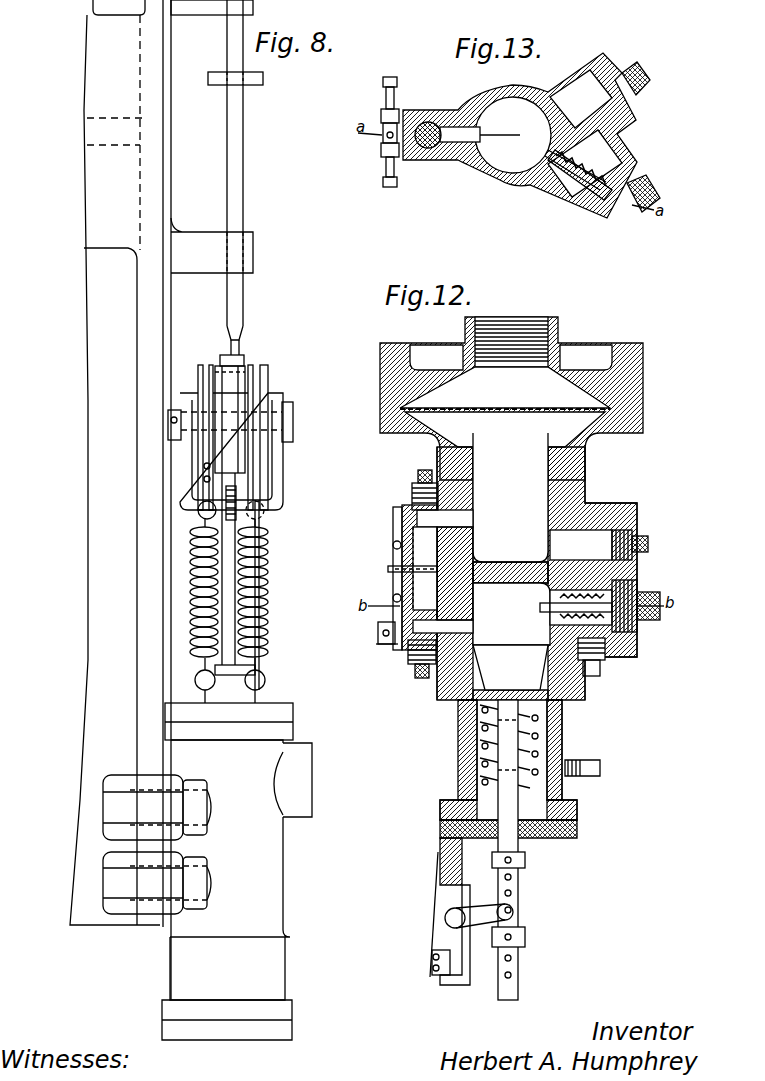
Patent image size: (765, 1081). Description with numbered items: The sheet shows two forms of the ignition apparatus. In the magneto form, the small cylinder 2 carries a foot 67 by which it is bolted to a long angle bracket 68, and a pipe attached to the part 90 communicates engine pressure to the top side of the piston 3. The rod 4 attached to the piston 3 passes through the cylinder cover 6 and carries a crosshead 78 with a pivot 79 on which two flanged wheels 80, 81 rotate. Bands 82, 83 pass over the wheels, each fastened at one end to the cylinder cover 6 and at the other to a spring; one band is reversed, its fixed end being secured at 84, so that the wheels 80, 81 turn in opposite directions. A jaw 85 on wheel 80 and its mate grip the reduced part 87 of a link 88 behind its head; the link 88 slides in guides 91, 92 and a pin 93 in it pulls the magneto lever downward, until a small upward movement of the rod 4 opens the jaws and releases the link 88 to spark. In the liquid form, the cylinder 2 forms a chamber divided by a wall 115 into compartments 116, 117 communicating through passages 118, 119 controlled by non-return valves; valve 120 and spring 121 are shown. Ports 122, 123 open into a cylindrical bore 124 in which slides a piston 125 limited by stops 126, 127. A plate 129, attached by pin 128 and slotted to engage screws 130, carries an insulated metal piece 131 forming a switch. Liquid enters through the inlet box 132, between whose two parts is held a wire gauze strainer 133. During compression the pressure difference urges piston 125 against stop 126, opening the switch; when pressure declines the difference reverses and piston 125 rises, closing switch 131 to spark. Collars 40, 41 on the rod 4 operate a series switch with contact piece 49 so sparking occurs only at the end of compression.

In FIG. 8, the small cylinder 2 is at (227, 890).
In FIG. 12, the small cylinder 2 is at (465, 710).
In FIG. 12, the piston 3 is at (510, 667).
In FIG. 8, the rod 4 is at (225, 641).
In FIG. 12, the rod 4 is at (512, 978).
In FIG. 8, the cylinder cover 6 is at (285, 712).
In FIG. 12, the collar 40 is at (525, 860).
In FIG. 12, the collar 41 is at (525, 934).
In FIG. 12, the contact piece 49 is at (432, 958).
In FIG. 8, the foot 67 is at (157, 844).
In FIG. 8, the angle bracket 68 is at (115, 462).
In FIG. 8, the crosshead 78 is at (272, 492).
In FIG. 8, the pivot 79 is at (290, 424).
In FIG. 8, the flanged wheel 80 is at (266, 372).
In FIG. 8, the flanged wheel 81 is at (220, 383).
In FIG. 8, the band 82 is at (256, 458).
In FIG. 8, the band 83 is at (205, 448).
In FIG. 8, the fixed end 84 is at (230, 611).
In FIG. 8, the jaw 85 is at (230, 414).
In FIG. 8, the reduced part 87 is at (243, 341).
In FIG. 8, the link 88 is at (240, 198).
In FIG. 8, the part 90 is at (304, 780).
In FIG. 8, the guide 91 is at (202, 275).
In FIG. 8, the guide 92 is at (210, 8).
In FIG. 8, the pin 93 is at (216, 78).
In FIG. 12, the wall 115 is at (525, 572).
In FIG. 13, the compartment 116 is at (494, 98).
In FIG. 12, the compartment 116 is at (511, 614).
In FIG. 12, the compartment 117 is at (510, 497).
In FIG. 13, the passage 118 is at (575, 195).
In FIG. 12, the passage 118 is at (599, 545).
In FIG. 13, the passage 119 is at (520, 135).
In FIG. 13, the valve 120 is at (548, 178).
In FIG. 12, the valve 120 is at (556, 618).
In FIG. 13, the spring 121 is at (641, 137).
In FIG. 12, the spring 121 is at (630, 590).
In FIG. 12, the port 122 is at (443, 627).
In FIG. 12, the port 123 is at (437, 577).
In FIG. 12, the cylindrical bore 124 is at (420, 545).
In FIG. 13, the piston 125 is at (425, 122).
In FIG. 12, the piston 125 is at (450, 545).
In FIG. 12, the stop 126 is at (412, 660).
In FIG. 12, the stop 127 is at (415, 490).
In FIG. 12, the pin 128 is at (395, 569).
In FIG. 12, the plate 129 is at (395, 520).
In FIG. 12, the screws 130 is at (393, 548).
In FIG. 13, the insulated metal piece 131 is at (384, 140).
In FIG. 12, the insulated metal piece 131 is at (380, 631).
In FIG. 12, the inlet box 132 is at (511, 398).
In FIG. 12, the wire gauze strainer 133 is at (505, 410).